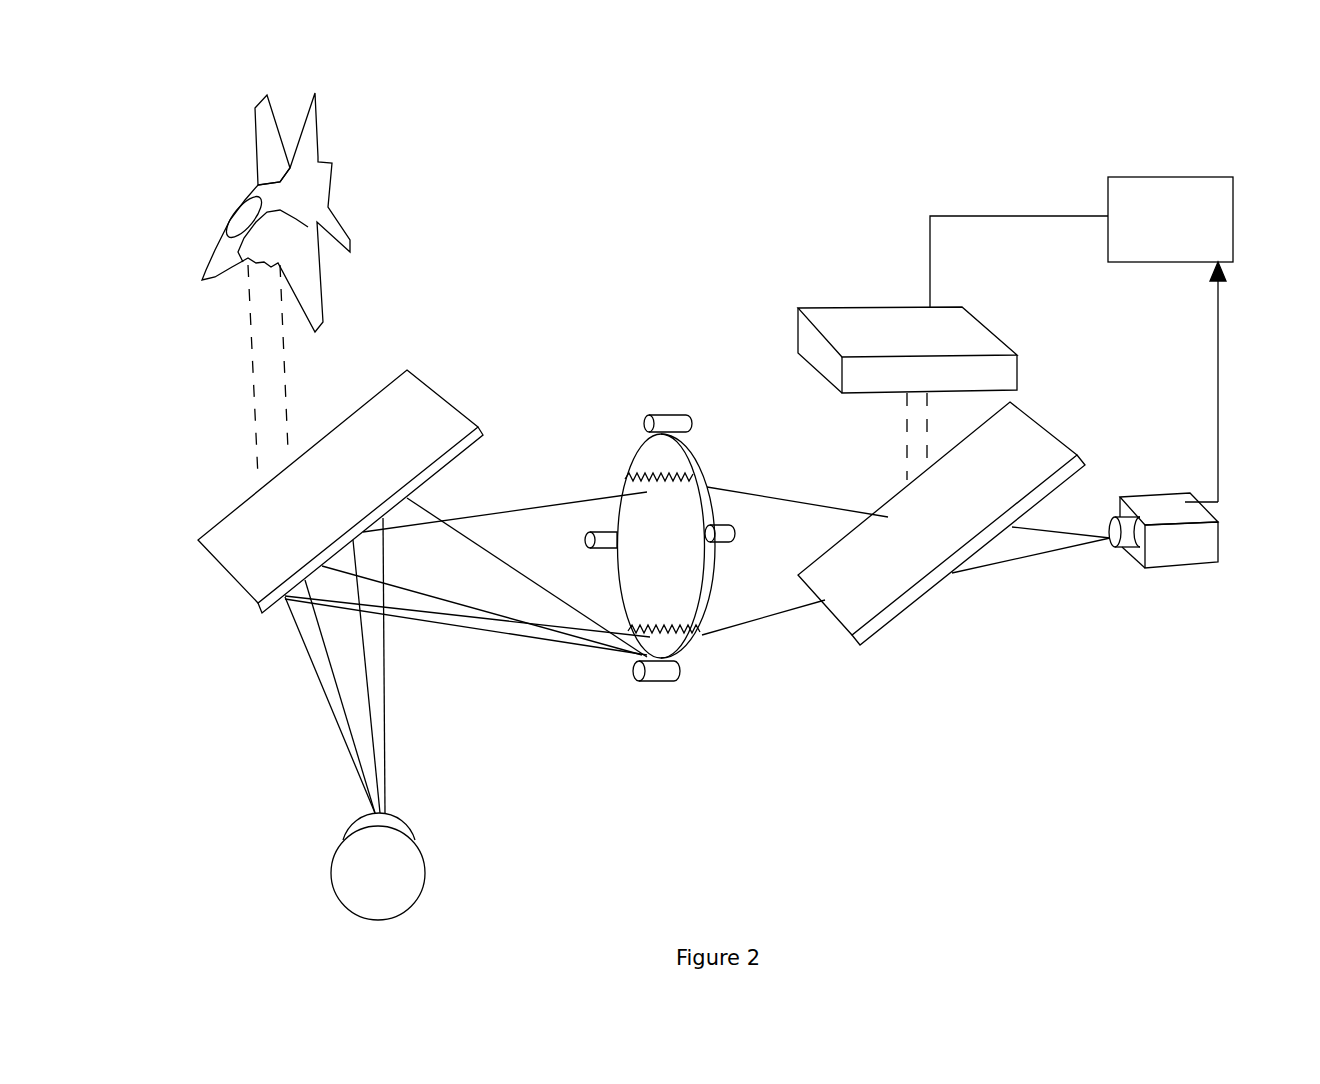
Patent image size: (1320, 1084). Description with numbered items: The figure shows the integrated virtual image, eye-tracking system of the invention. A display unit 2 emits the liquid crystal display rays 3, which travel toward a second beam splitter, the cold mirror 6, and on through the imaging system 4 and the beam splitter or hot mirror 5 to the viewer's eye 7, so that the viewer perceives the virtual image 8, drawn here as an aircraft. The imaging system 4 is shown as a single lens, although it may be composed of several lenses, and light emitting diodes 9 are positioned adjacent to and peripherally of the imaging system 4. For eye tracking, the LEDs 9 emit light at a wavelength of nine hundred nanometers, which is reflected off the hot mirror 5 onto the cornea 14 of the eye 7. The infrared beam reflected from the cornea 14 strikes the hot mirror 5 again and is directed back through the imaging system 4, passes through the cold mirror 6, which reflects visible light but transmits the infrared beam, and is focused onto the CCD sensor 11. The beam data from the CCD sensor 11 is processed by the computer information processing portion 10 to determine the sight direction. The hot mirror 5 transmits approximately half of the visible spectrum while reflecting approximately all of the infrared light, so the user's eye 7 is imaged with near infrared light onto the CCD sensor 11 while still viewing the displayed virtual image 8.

The light source / illuminator 2 is at (868, 307).
The liquid crystal display (LCD) rays 3 is at (907, 433).
The imaging system 4 is at (655, 558).
The beam splitter (hot mirror) 5 is at (428, 403).
The second beam splitter (cold mirror) 6 is at (927, 590).
The viewer's eye 7 is at (425, 863).
The virtual image 8 is at (318, 143).
The light emitting diodes (LEDs) 9 is at (660, 422).
The computer information processing portion 10 is at (1081, 339).
The CCD sensor 11 is at (1220, 532).
The cornea 14 is at (392, 828).